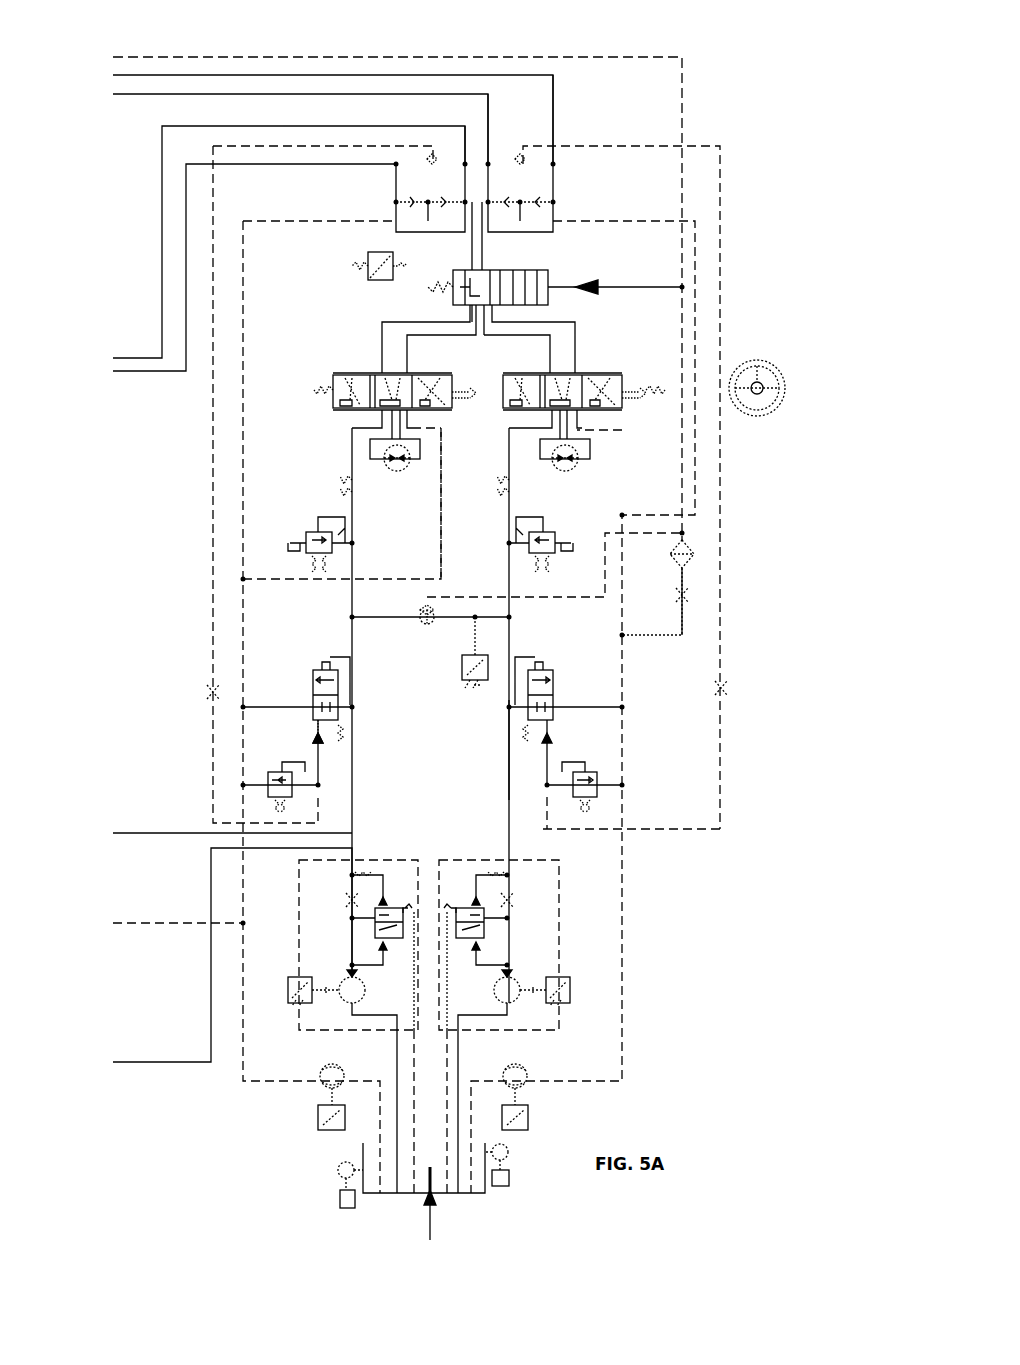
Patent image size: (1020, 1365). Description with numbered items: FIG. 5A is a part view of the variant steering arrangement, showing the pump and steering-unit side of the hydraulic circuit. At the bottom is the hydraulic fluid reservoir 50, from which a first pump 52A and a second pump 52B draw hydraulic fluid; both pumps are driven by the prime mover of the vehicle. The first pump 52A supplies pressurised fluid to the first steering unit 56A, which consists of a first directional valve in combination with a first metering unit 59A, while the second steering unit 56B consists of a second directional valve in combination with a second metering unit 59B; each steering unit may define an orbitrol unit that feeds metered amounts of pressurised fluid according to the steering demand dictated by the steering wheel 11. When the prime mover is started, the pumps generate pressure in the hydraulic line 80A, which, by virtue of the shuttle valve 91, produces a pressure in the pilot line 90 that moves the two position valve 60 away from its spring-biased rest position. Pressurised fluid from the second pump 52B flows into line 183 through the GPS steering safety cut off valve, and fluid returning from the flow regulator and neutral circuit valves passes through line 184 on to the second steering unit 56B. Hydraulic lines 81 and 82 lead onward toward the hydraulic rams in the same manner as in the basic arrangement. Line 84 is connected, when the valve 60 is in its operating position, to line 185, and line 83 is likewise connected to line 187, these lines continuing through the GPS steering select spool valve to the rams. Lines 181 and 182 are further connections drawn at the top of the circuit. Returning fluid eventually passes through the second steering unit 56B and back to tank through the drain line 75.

The steering wheel 11 is at (770, 412).
The hydraulic fluid reservoir 50 is at (424, 1148).
The first pump 52A is at (508, 977).
The second pump 52B is at (352, 977).
The first steering unit 56A is at (595, 360).
The second steering unit 56B is at (328, 420).
The first metering unit 59A is at (585, 460).
The second metering unit 59B is at (410, 465).
The valve 60 is at (370, 302).
The drain line 75 is at (441, 473).
The hydraulic line 80A is at (509, 795).
The hydraulic line 81 is at (500, 337).
The hydraulic line 82 is at (578, 335).
The line 83 is at (380, 335).
The line 84 is at (420, 337).
The pilot line 90 is at (590, 55).
The shuttle valve 91 is at (440, 594).
The hydraulic line 181 is at (103, 78).
The hydraulic line 182 is at (128, 97).
The line 183 is at (152, 1066).
The line 184 is at (150, 830).
The line 185 is at (324, 126).
The line 187 is at (324, 170).